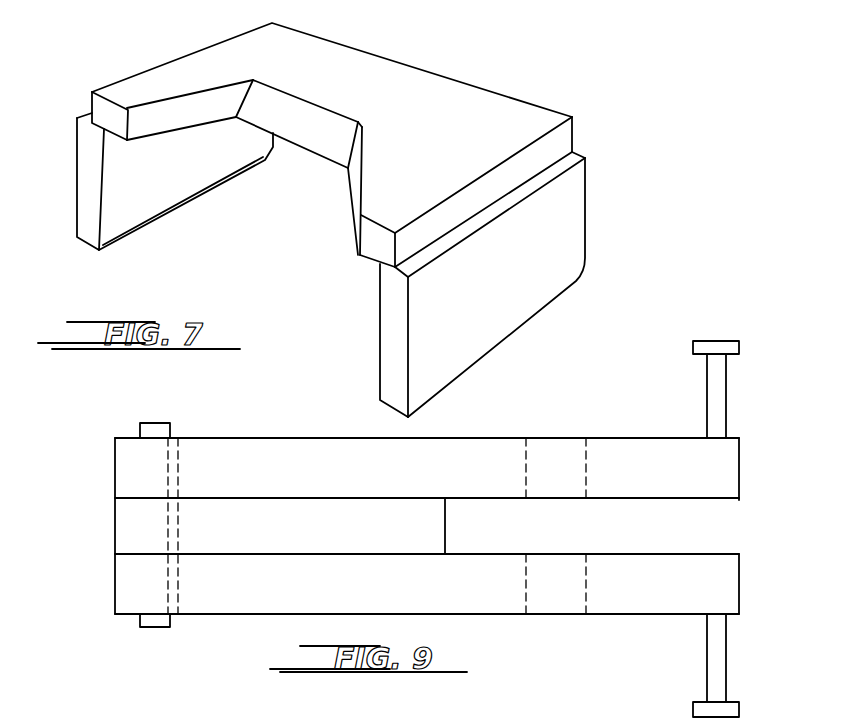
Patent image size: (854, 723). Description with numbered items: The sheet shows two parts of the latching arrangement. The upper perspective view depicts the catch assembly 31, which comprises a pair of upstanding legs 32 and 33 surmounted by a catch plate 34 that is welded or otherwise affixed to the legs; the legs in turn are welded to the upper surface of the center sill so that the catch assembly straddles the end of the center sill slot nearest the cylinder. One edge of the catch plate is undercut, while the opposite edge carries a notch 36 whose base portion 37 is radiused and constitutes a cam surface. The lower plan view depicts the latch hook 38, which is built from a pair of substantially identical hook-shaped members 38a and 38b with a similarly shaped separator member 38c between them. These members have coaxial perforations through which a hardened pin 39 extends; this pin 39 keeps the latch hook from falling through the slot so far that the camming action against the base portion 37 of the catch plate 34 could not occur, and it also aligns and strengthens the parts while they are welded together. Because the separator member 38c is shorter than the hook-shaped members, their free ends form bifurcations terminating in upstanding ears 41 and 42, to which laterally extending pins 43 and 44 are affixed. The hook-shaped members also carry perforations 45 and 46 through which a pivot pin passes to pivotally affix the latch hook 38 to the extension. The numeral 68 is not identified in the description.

In FIG. 7, the catch assembly 31 is at (329, 216).
In FIG. 7, the upstanding leg 32 is at (85, 188).
In FIG. 7, the upstanding leg 33 is at (398, 327).
In FIG. 7, the catch plate 34 is at (543, 105).
In FIG. 7, the notch 36 is at (177, 107).
In FIG. 7, the base portion 37 is at (310, 118).
In FIG. 9, the latch hook 38 is at (408, 529).
In FIG. 9, the hook-shaped member 38a is at (233, 600).
In FIG. 9, the hook-shaped member 38b is at (257, 447).
In FIG. 9, the separator member 38c is at (280, 526).
In FIG. 9, the hardened pin 39 is at (152, 428).
In FIG. 9, the upstanding ear 41 is at (730, 585).
In FIG. 9, the upstanding ear 42 is at (730, 472).
In FIG. 9, the laterally extending pin 43 is at (720, 660).
In FIG. 9, the laterally extending pin 44 is at (718, 377).
In FIG. 9, the perforation 45 is at (526, 583).
In FIG. 9, the perforation 46 is at (527, 457).
In FIG. 9, the element 68 is at (490, 720).